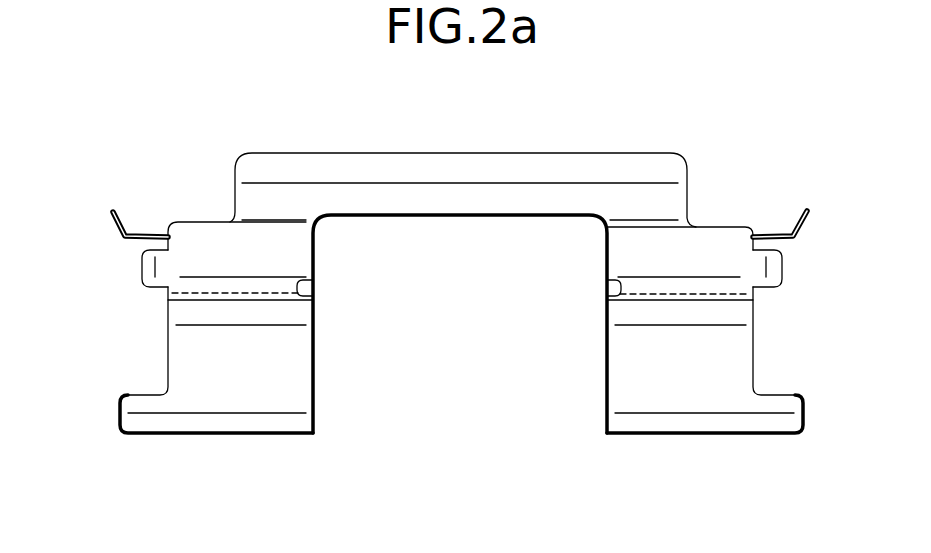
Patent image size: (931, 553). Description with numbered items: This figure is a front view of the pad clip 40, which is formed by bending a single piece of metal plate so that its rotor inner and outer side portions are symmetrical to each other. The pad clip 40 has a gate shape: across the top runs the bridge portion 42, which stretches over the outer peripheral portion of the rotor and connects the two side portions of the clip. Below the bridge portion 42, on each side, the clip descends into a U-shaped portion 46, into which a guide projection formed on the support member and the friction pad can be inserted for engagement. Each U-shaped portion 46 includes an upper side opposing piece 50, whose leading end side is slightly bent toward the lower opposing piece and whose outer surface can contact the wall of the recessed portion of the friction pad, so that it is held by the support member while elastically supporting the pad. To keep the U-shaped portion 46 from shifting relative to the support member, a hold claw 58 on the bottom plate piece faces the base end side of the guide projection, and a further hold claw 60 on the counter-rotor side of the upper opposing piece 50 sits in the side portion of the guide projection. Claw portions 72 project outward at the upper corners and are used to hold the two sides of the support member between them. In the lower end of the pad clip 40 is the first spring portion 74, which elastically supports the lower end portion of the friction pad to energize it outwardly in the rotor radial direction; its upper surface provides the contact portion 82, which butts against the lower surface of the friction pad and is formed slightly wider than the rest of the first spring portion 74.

The pad clip 40 is at (312, 152).
The bridge portion 42 is at (546, 151).
The U-shaped portion 46 is at (278, 305).
The upper side opposing piece 50 is at (303, 245).
The hold claw 58 is at (305, 277).
The hold claw 60 is at (140, 268).
The claw portion 72 is at (124, 226).
The first spring portion 74 is at (166, 366).
The contact portion 82 is at (233, 413).